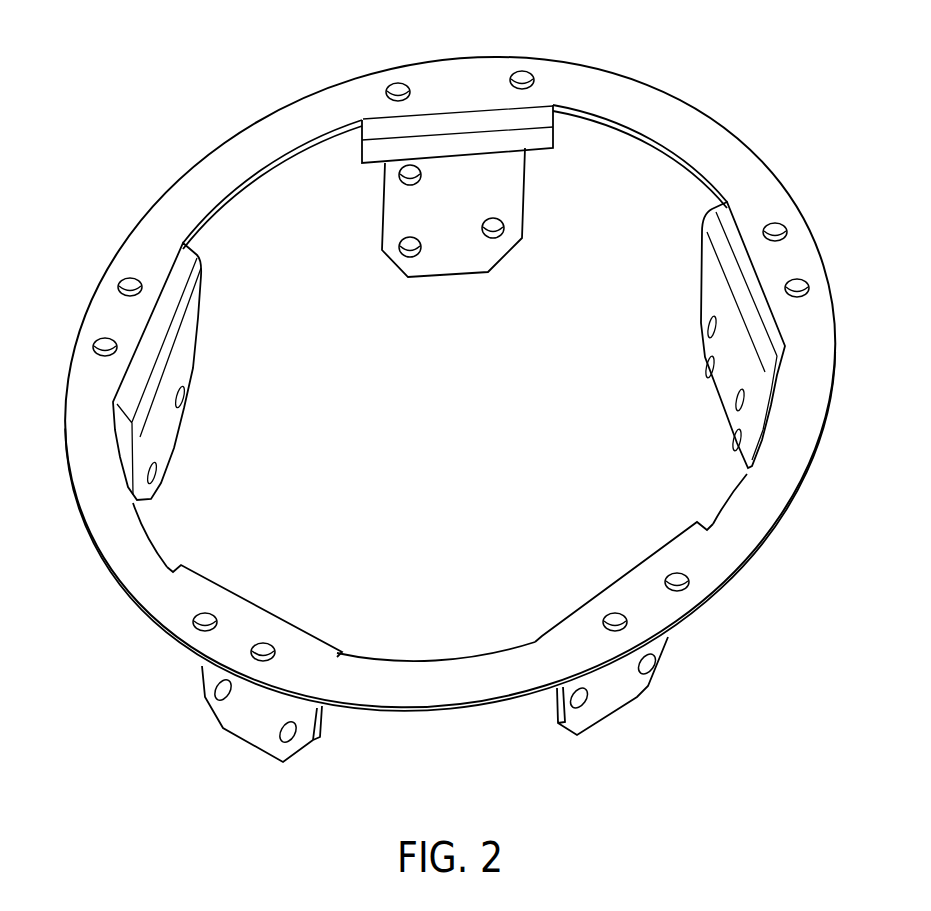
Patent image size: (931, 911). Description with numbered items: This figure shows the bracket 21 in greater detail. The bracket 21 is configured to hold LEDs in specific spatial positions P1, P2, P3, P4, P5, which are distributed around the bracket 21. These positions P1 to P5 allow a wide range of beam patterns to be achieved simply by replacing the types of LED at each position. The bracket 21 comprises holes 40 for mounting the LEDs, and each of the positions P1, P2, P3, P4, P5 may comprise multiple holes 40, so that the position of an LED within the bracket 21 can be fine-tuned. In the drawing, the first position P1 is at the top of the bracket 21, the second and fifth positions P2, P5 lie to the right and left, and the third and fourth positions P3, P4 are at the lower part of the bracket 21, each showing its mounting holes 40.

The bracket 21 is at (657, 98).
The holes 40 is at (497, 237).
The spatial position P1 is at (457, 145).
The spatial position P2 is at (780, 335).
The spatial position P3 is at (624, 635).
The spatial position P4 is at (254, 675).
The spatial position P5 is at (125, 371).